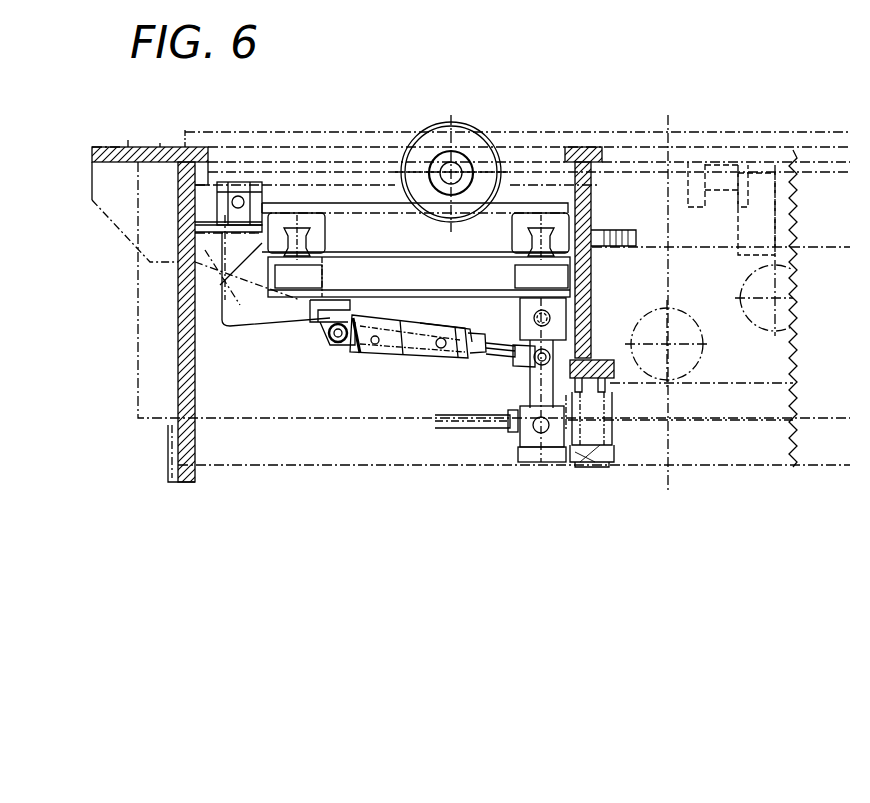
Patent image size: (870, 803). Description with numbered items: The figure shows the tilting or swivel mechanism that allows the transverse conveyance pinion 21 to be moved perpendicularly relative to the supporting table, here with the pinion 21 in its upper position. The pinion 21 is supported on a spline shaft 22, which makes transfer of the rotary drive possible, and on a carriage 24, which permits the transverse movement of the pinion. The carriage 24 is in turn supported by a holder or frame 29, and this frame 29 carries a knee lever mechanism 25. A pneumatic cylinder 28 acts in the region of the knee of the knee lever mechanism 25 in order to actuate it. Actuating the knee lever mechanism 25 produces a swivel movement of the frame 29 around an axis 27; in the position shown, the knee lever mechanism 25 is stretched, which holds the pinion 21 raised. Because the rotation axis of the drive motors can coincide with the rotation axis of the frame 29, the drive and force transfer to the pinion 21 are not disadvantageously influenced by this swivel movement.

The transverse conveyance pinion 21 is at (471, 128).
The spline shaft 22 is at (441, 156).
The carriage 24 is at (306, 210).
The knee lever mechanism 25 is at (562, 392).
The axis 27 is at (236, 200).
The pneumatic cylinder 28 is at (396, 365).
The frame 29 is at (268, 275).